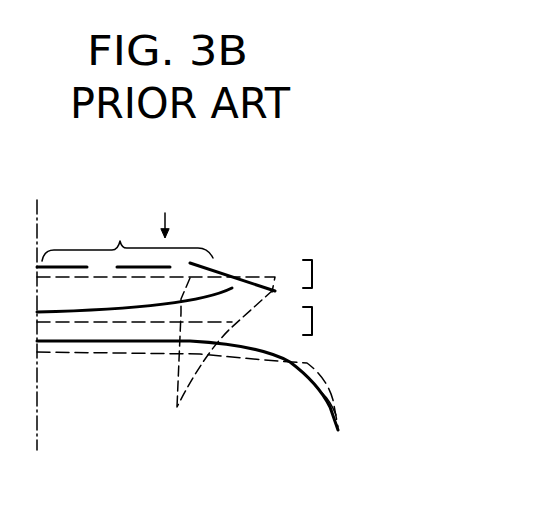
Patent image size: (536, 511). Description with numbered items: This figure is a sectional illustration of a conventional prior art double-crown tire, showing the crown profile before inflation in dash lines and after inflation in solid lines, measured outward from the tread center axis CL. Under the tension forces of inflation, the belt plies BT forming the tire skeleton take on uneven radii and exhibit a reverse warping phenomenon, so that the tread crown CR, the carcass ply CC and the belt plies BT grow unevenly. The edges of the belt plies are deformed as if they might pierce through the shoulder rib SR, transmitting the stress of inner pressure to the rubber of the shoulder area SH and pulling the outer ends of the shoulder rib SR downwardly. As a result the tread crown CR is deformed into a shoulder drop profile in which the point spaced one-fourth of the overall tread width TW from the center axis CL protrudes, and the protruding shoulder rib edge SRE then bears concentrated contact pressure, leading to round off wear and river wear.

The tread center axis CL is at (38, 303).
The tread crown CR is at (127, 234).
The overall tread width TW is at (187, 205).
The shoulder rib SR is at (233, 258).
The shoulder area SH is at (272, 258).
The shoulder rib edge SRE is at (211, 364).
The belt plies BT is at (227, 335).
The carcass ply CC is at (322, 393).